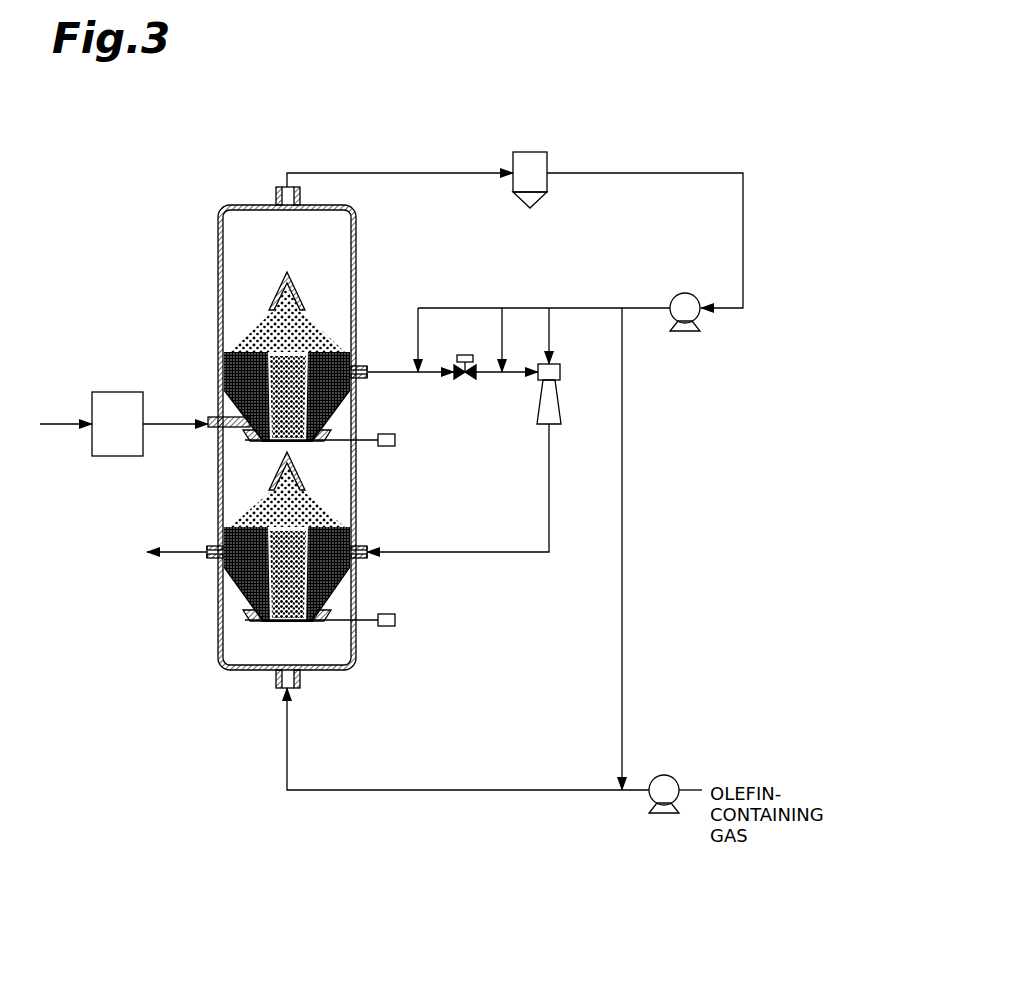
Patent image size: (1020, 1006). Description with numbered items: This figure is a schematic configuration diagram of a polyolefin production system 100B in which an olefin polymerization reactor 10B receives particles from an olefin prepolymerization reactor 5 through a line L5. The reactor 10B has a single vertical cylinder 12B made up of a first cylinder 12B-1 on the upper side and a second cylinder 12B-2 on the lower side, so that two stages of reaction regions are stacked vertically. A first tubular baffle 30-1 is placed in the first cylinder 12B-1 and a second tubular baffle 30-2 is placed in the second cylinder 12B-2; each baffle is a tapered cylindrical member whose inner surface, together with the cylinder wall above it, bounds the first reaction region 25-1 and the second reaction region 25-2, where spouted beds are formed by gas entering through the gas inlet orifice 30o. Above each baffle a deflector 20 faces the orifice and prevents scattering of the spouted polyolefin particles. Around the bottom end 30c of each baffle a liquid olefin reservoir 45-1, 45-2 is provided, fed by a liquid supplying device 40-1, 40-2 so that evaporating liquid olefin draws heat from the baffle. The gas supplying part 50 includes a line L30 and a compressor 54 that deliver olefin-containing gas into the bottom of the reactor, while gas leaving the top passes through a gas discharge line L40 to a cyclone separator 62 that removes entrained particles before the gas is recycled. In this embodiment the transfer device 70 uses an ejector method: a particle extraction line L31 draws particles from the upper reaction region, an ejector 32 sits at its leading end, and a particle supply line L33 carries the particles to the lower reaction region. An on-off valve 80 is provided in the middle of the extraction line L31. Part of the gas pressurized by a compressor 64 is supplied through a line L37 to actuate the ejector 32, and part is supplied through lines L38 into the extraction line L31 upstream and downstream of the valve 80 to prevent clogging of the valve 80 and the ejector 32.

The polyolefin production system 100B is at (760, 80).
The olefin polymerization reactor 10B is at (210, 200).
The cylinder 12B is at (220, 250).
The first cylinder 12B-1 is at (356, 529).
The second cylinder 12B-2 is at (356, 280).
The deflector 20 is at (283, 290).
The first reaction region 25-1 is at (245, 527).
The second reaction region 25-2 is at (240, 340).
The olefin prepolymerization reactor 5 is at (117, 392).
The line L5 is at (165, 420).
The bottom end of tubular baffle 30c is at (265, 446).
The gas inlet orifice 30o is at (272, 448).
The first tubular baffle 30-1 is at (337, 612).
The second tubular baffle 30-2 is at (337, 432).
The liquid olefin reservoir 45-1 is at (317, 622).
The liquid olefin reservoir 45-2 is at (317, 442).
The liquid supplying device 40-1 is at (396, 622).
The liquid supplying device 40-2 is at (396, 442).
The gas discharge line L40 is at (430, 177).
The cyclone separator 62 is at (548, 160).
The compressor 64 is at (682, 293).
The transfer device 70 is at (548, 290).
The lines L38 is at (500, 330).
The line L37 is at (551, 328).
The particle extraction line L31 is at (430, 375).
The on-off valve 80 is at (478, 375).
The ejector 32 is at (552, 426).
The particle supply line L33 is at (485, 550).
The line L30 is at (540, 788).
The compressor 54 is at (668, 775).
The gas supplying part 50 is at (287, 808).